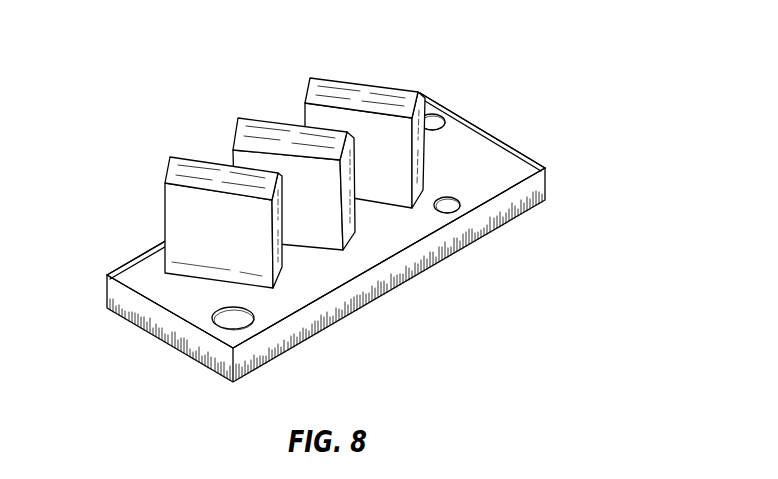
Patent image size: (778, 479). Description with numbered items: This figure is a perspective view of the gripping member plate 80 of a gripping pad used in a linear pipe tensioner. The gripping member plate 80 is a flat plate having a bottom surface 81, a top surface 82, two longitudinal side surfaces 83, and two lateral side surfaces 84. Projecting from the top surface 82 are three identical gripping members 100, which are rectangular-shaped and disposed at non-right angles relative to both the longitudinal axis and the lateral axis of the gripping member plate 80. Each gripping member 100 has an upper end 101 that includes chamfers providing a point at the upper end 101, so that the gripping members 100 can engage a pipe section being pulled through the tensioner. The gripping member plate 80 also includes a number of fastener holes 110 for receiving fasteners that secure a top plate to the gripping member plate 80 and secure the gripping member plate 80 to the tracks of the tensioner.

The gripping member plate 80 is at (565, 53).
The bottom surface 81 is at (322, 237).
The top surface 82 is at (467, 142).
The longitudinal side surfaces 83 is at (535, 192).
The lateral side surfaces 84 is at (497, 138).
The gripping members 100 is at (312, 117).
The upper end 101 is at (327, 78).
The fastener holes 110 is at (430, 122).